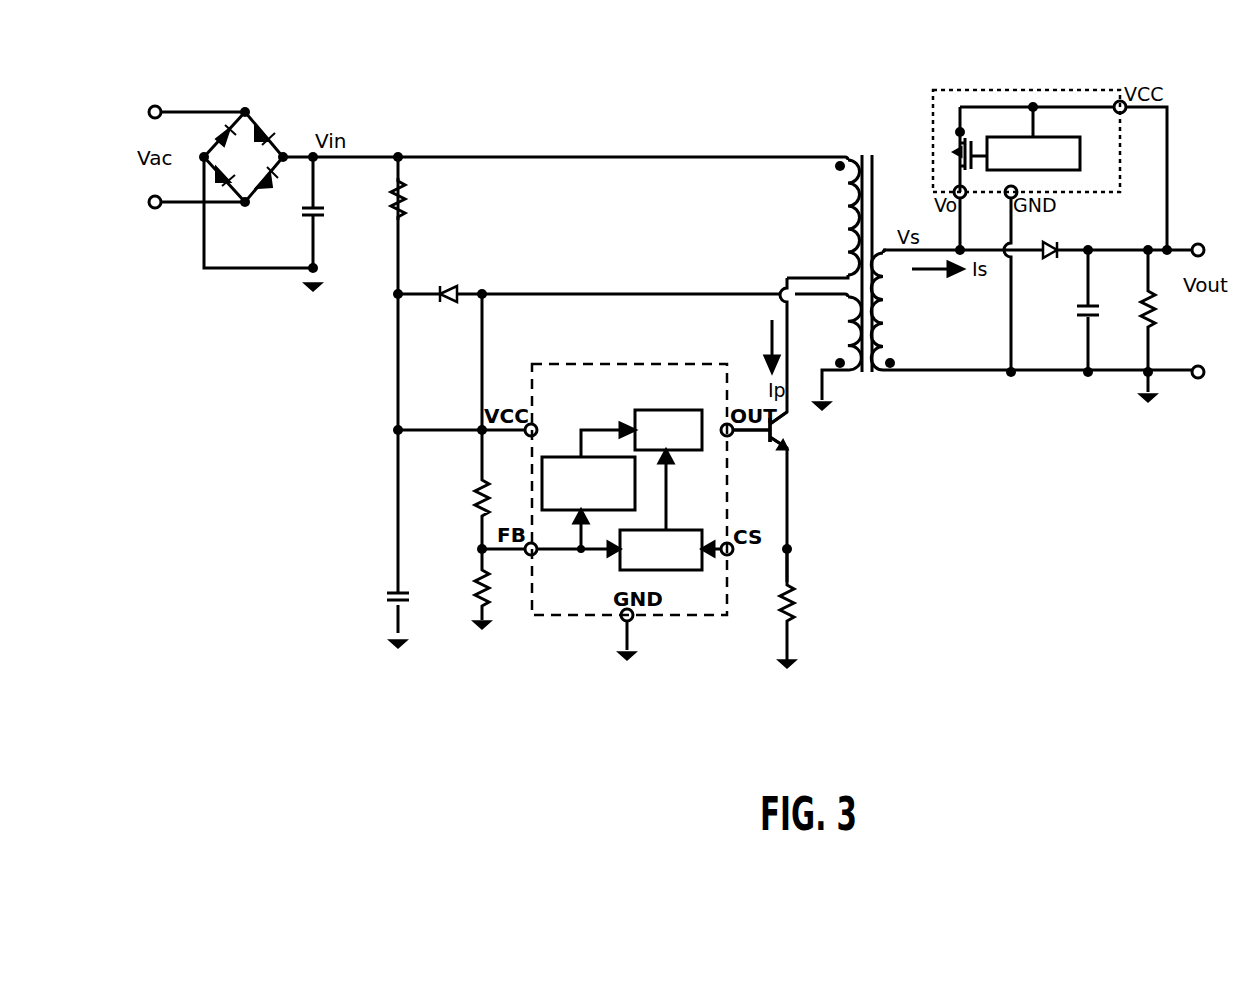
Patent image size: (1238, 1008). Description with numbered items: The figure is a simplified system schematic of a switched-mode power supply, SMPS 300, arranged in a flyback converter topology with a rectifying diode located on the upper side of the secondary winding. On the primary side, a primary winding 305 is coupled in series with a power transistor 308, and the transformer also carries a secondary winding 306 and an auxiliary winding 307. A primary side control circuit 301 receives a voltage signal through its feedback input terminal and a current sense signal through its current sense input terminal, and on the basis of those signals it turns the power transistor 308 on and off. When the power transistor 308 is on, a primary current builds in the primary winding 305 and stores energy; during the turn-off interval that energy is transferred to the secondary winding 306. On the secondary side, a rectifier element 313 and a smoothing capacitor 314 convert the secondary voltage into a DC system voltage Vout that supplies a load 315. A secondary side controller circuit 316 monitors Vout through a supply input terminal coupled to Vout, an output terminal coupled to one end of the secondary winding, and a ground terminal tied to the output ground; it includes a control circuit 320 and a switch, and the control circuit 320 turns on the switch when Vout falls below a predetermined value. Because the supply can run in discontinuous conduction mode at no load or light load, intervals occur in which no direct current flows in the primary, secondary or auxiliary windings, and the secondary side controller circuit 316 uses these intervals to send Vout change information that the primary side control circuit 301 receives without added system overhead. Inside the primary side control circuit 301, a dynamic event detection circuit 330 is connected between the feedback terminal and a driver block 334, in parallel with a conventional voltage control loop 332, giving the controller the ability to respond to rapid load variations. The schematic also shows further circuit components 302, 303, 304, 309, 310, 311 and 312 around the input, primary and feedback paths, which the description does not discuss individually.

The SMPS 300 is at (496, 112).
The primary side control circuit 301 is at (575, 624).
The rectifier bridge 302 is at (273, 117).
The input capacitor 303 is at (298, 212).
The start-up resistor 304 is at (423, 199).
The primary winding 305 is at (837, 182).
The secondary winding 306 is at (895, 298).
The auxiliary winding 307 is at (835, 323).
The power transistor 308 is at (797, 441).
The current sense resistor 309 is at (807, 604).
The diode 310 is at (451, 281).
The VCC capacitor 311 is at (373, 600).
The feedback resistor 312 is at (461, 588).
The rectifier element 313 is at (1046, 262).
The smoothing capacitor 314 is at (1105, 324).
The load 315 is at (1171, 309).
The secondary side controller circuit 316 is at (1048, 129).
The control circuit 320 is at (1072, 150).
The dynamic event detection circuit 330 is at (551, 466).
The voltage control loop 332 is at (665, 536).
The driver block 334 is at (668, 418).